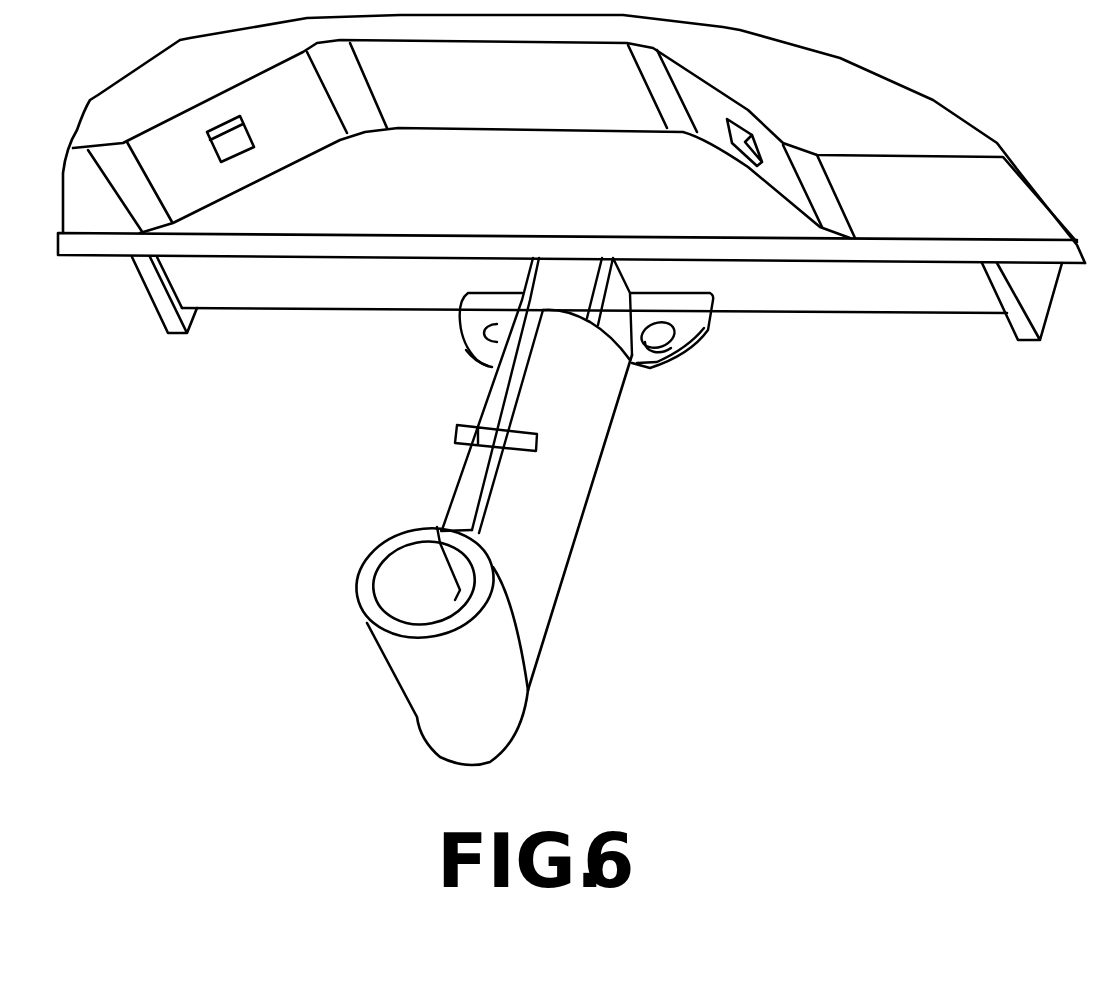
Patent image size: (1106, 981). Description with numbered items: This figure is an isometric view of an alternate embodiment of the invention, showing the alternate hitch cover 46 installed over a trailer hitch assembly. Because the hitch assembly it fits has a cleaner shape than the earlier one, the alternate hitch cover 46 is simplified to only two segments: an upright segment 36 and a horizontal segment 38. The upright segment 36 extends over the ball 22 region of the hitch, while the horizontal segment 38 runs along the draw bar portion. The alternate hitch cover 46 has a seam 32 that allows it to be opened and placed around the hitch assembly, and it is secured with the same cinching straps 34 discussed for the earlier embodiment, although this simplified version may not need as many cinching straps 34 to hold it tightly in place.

The ball 22 is at (438, 605).
The seam 32 is at (498, 480).
The cinching straps 34 is at (455, 428).
The upright segment 36 is at (410, 682).
The horizontal segment 38 is at (548, 590).
The alternate hitch cover 46 is at (573, 560).